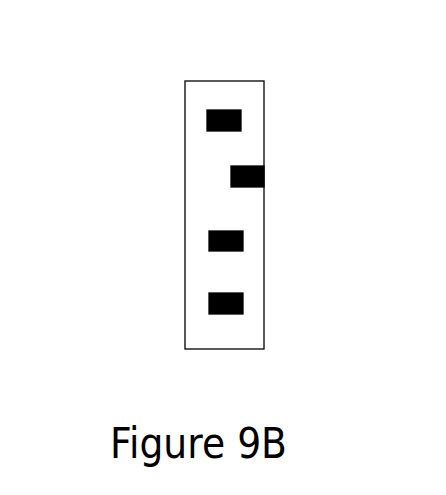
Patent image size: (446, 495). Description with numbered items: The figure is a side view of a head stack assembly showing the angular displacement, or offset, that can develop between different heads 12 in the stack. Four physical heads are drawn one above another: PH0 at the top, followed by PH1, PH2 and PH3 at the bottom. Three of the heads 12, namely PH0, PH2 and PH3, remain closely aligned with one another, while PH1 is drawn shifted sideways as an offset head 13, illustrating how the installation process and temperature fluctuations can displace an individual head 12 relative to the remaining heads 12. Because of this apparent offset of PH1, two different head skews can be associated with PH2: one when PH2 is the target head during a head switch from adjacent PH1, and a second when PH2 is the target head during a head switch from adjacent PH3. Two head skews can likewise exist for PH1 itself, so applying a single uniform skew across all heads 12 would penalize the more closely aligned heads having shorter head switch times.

The head 12 is at (213, 173).
The offset head 13 is at (217, 143).
The physical head 0 PH0 is at (252, 121).
The physical head 1 PH1 is at (275, 176).
The physical head 2 PH2 is at (253, 242).
The physical head 3 PH3 is at (253, 303).